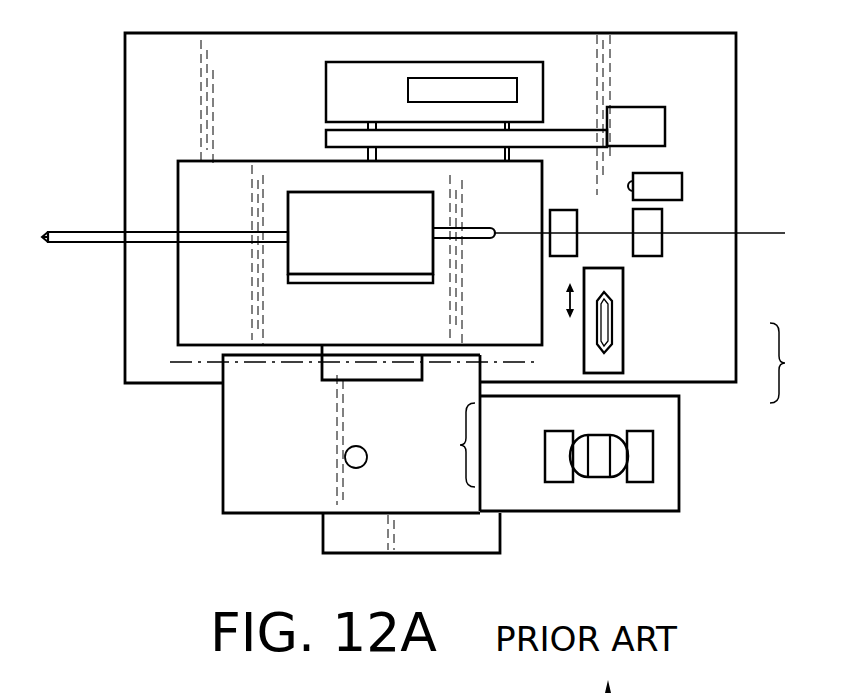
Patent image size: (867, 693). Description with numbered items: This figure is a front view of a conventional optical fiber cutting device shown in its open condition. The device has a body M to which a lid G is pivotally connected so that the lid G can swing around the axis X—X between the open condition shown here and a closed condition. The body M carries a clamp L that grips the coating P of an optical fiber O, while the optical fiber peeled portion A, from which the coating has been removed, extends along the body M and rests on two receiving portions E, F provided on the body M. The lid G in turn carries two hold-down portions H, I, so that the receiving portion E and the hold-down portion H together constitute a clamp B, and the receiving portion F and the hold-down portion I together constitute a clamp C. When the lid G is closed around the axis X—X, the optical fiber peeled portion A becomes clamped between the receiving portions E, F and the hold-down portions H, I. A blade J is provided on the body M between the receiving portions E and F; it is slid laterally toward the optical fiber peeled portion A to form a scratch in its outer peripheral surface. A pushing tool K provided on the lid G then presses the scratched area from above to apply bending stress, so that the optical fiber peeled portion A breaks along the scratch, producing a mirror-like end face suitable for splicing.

The optical fiber peeled portion A is at (710, 229).
The body M is at (125, 332).
The optical fiber O is at (88, 232).
The coating P is at (228, 231).
The clamp L is at (303, 197).
The receiving portion E is at (557, 257).
The receiving portion F is at (647, 257).
The blade J is at (612, 327).
The axis X is at (348, 365).
The lid G is at (273, 486).
The hold-down portion H is at (545, 458).
The pushing tool K is at (596, 483).
The hold-down portion I is at (642, 450).
The clamp B is at (455, 445).
The clamp C is at (789, 363).